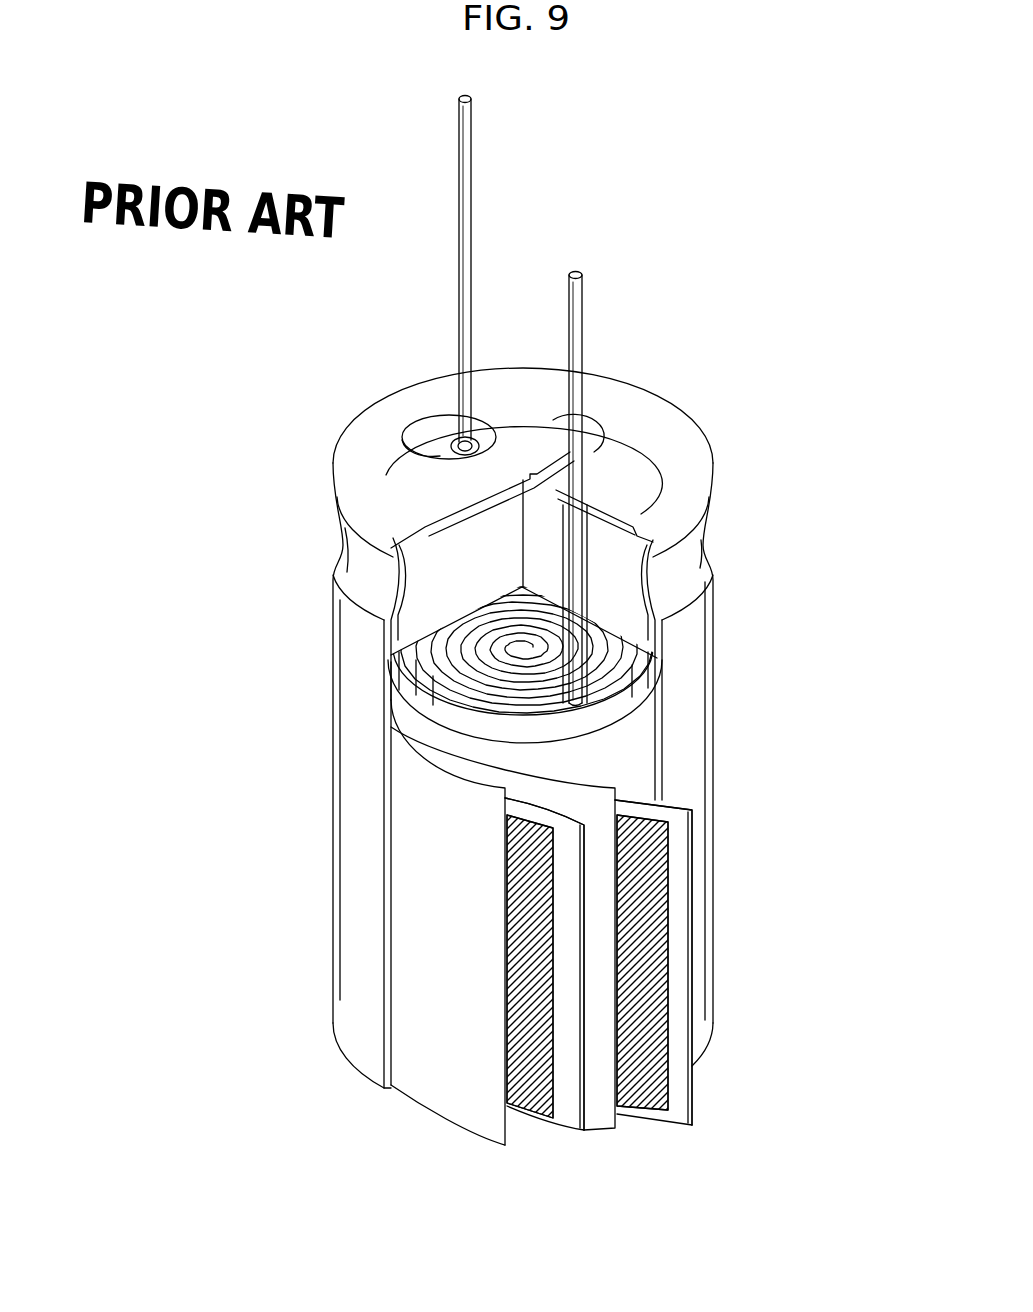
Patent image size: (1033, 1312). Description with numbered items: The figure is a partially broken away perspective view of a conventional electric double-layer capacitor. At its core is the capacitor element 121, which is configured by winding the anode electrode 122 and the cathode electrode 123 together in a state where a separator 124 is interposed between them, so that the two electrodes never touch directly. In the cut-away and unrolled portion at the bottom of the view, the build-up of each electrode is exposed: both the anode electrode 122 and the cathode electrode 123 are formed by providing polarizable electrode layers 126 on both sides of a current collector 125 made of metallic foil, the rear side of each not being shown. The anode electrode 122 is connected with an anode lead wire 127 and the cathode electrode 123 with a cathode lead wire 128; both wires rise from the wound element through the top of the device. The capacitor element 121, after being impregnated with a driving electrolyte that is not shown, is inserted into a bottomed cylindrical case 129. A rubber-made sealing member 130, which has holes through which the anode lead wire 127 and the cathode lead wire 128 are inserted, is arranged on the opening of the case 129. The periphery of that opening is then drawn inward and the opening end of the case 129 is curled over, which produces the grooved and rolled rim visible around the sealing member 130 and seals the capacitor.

The capacitor element 121 is at (495, 682).
The anode electrode 122 is at (618, 1198).
The cathode electrode 123 is at (493, 1198).
The separator 124 is at (438, 1085).
The current collector 125 is at (568, 1108).
The polarizable electrode layer 126 is at (532, 1103).
The anode lead wire 127 is at (470, 198).
The cathode lead wire 128 is at (581, 305).
The case 129 is at (357, 812).
The sealing member 130 is at (443, 552).